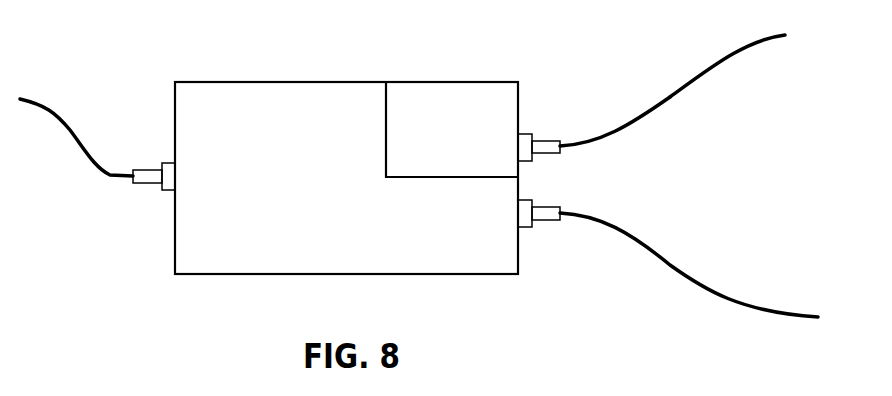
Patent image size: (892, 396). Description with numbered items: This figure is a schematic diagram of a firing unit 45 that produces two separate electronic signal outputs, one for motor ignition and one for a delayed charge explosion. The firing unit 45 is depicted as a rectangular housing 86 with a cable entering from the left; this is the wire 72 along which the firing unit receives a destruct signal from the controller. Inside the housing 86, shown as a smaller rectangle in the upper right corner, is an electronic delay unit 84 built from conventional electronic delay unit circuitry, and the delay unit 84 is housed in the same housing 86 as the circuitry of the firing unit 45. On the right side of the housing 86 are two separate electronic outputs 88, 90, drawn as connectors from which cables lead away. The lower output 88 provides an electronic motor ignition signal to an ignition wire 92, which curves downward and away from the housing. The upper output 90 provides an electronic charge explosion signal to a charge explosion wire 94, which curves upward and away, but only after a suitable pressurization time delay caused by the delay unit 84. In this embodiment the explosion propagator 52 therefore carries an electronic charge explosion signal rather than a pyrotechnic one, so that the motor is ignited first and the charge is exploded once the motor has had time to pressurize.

The firing unit 45 is at (460, 274).
The explosion propagator 52 is at (647, 115).
The wire 72 is at (52, 110).
The delay unit 84 is at (403, 90).
The housing 86 is at (190, 274).
The output 88 is at (562, 217).
The output 90 is at (562, 150).
The ignition wire 92 is at (773, 315).
The charge explosion wire 94 is at (727, 57).